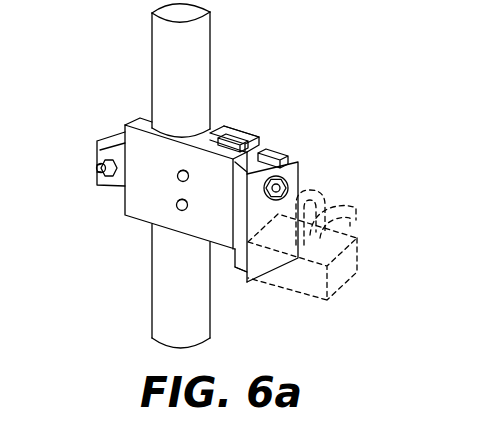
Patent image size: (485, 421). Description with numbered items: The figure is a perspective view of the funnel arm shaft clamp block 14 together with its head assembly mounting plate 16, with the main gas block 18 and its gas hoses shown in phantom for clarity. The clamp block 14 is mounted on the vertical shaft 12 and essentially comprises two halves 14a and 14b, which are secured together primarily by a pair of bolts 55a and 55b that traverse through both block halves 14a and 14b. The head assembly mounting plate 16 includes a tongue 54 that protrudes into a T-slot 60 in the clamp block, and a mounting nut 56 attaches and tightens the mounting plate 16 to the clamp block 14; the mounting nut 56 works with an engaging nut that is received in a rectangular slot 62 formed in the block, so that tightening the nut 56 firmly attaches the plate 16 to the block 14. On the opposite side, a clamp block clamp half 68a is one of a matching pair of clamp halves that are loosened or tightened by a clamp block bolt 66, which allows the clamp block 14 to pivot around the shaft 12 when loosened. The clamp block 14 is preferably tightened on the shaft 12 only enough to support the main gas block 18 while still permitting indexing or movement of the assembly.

The shaft 12 is at (212, 21).
The funnel arm shaft clamp block 14 is at (125, 203).
The clamp block half 14a is at (213, 238).
The clamp block half 14b is at (229, 130).
The head assembly mounting plate 16 is at (298, 162).
The main gas block 18 is at (368, 225).
The tongue 54 is at (262, 152).
The bolt 55a is at (177, 178).
The bolt 55b is at (178, 208).
The mounting nut 56 is at (300, 182).
The T-slot 60 is at (270, 140).
The rectangular slot 62 is at (252, 155).
The clamp block bolt 66 is at (97, 168).
The clamp block clamp half 68a is at (97, 150).